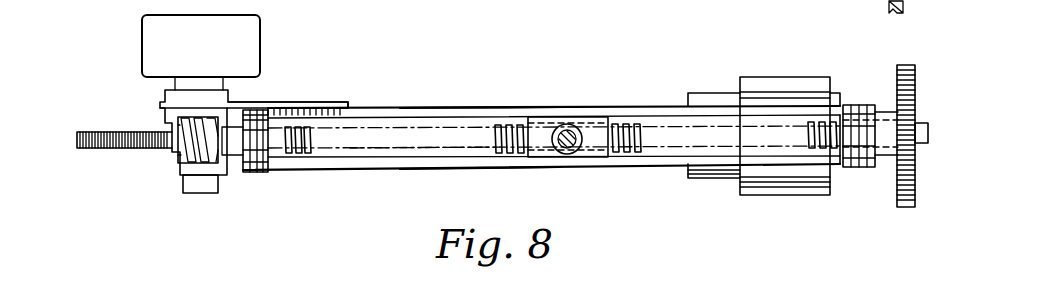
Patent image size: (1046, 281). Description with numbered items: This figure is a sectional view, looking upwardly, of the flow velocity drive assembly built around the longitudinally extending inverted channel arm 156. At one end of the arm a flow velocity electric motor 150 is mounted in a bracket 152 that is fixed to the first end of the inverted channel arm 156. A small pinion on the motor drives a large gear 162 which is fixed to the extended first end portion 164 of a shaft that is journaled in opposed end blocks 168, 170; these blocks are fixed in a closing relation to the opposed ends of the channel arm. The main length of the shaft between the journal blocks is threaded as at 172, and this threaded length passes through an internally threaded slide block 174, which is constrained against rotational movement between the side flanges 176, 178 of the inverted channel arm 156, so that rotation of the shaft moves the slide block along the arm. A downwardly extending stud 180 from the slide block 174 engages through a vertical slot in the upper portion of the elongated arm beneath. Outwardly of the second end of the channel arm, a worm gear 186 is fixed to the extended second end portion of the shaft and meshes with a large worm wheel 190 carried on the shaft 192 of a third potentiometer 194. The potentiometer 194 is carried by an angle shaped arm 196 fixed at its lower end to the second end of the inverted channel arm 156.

The flow velocity electric motor 150 is at (712, 85).
The bracket 152 is at (780, 86).
The inverted channel arm 156 is at (435, 109).
The large gear 162 is at (908, 65).
The extended first end portion 164 is at (919, 143).
The end block 168 is at (862, 105).
The end block 170 is at (263, 110).
The threaded portion 172 is at (420, 150).
The slide block 174 is at (540, 132).
The side flange 176 is at (473, 108).
The side flange 178 is at (452, 166).
The stud 180 is at (575, 125).
The worm gear 186 is at (183, 158).
The worm wheel 190 is at (136, 152).
The shaft 192 is at (201, 190).
The third potentiometer 194 is at (213, 50).
The angle shaped arm 196 is at (347, 102).